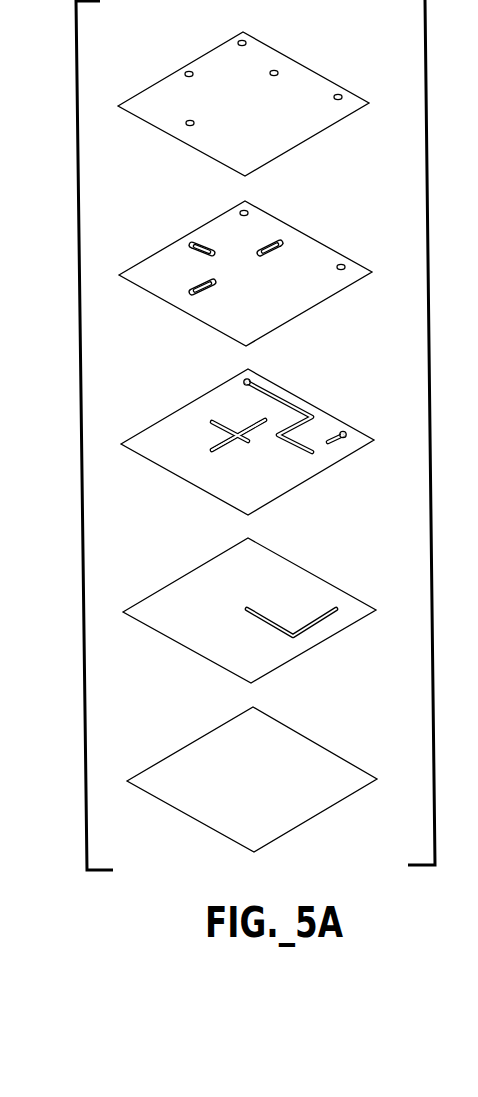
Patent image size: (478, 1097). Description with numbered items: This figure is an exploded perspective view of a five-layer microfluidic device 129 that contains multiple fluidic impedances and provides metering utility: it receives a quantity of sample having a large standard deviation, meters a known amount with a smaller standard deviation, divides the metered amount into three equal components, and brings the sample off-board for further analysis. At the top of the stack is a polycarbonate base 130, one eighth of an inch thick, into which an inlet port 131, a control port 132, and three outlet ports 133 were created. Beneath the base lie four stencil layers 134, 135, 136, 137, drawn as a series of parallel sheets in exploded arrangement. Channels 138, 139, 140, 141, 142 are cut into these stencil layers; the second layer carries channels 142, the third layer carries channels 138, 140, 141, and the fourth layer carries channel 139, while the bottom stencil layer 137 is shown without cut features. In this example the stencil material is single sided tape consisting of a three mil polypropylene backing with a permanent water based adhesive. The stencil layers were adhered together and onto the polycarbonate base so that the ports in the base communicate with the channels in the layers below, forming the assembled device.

The microfluidic device 129 is at (78, 406).
The polycarbonate base 130 is at (362, 108).
The inlet port 131 is at (339, 92).
The control port 132 is at (240, 36).
The outlet ports 133 is at (189, 120).
The stencil layer 134 is at (355, 282).
The stencil layer 135 is at (353, 456).
The stencil layer 136 is at (363, 617).
The stencil layer 137 is at (367, 785).
The channel 138 is at (342, 432).
The channel 139 is at (305, 628).
The channel 140 is at (288, 403).
The channel 141 is at (217, 443).
The channels 142 is at (191, 243).